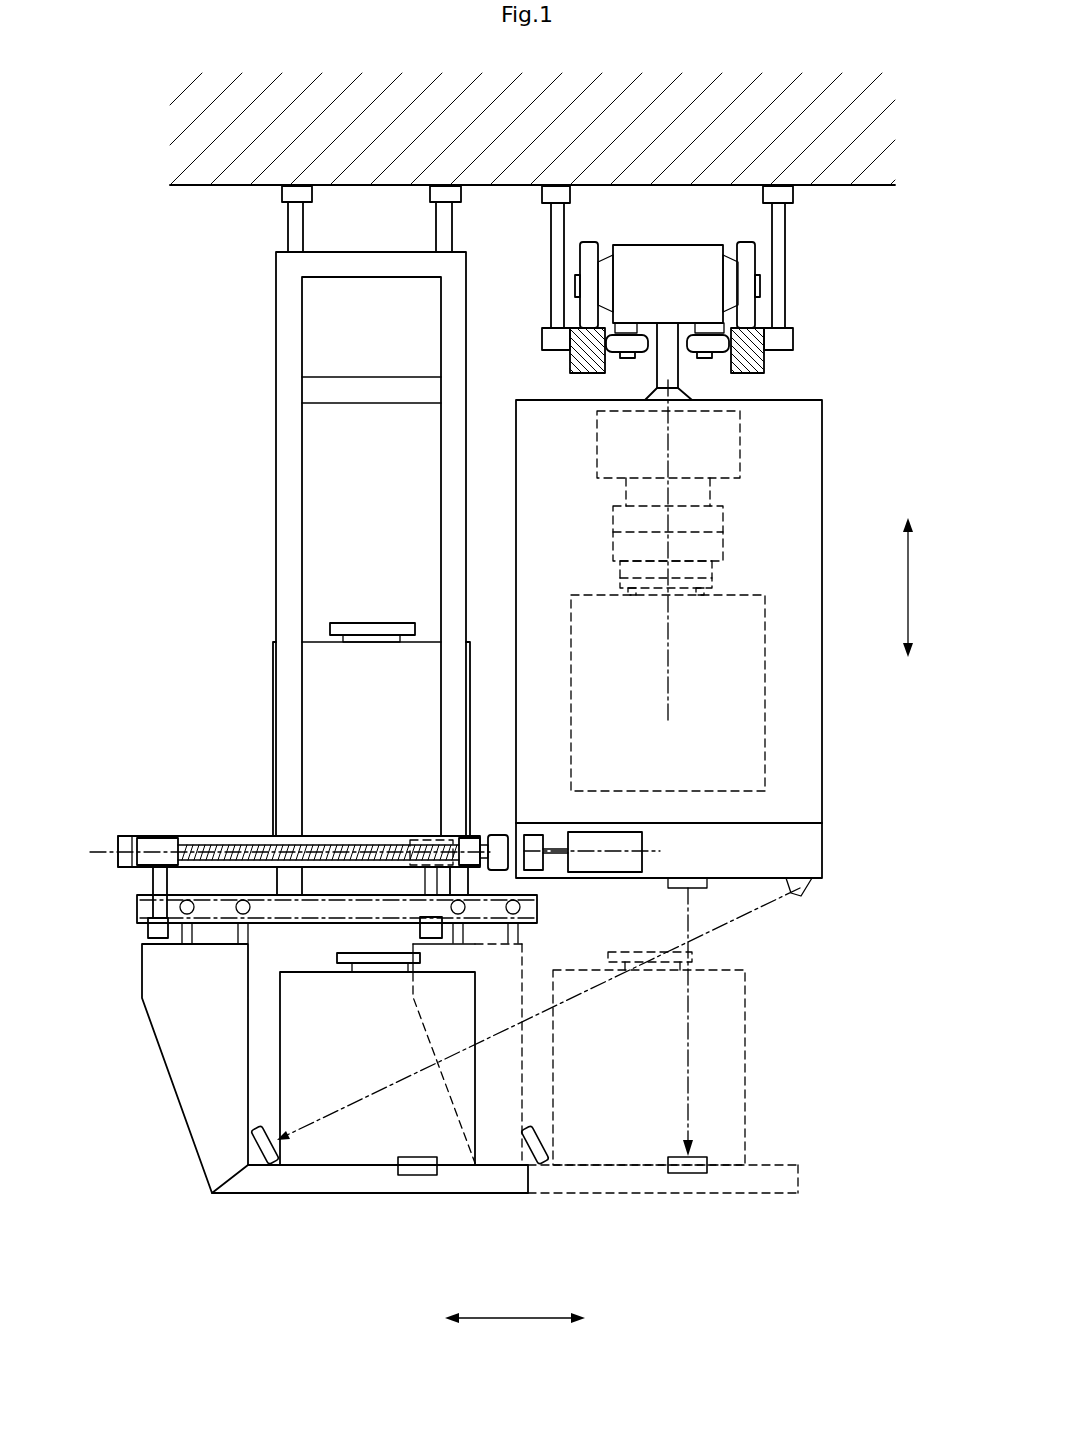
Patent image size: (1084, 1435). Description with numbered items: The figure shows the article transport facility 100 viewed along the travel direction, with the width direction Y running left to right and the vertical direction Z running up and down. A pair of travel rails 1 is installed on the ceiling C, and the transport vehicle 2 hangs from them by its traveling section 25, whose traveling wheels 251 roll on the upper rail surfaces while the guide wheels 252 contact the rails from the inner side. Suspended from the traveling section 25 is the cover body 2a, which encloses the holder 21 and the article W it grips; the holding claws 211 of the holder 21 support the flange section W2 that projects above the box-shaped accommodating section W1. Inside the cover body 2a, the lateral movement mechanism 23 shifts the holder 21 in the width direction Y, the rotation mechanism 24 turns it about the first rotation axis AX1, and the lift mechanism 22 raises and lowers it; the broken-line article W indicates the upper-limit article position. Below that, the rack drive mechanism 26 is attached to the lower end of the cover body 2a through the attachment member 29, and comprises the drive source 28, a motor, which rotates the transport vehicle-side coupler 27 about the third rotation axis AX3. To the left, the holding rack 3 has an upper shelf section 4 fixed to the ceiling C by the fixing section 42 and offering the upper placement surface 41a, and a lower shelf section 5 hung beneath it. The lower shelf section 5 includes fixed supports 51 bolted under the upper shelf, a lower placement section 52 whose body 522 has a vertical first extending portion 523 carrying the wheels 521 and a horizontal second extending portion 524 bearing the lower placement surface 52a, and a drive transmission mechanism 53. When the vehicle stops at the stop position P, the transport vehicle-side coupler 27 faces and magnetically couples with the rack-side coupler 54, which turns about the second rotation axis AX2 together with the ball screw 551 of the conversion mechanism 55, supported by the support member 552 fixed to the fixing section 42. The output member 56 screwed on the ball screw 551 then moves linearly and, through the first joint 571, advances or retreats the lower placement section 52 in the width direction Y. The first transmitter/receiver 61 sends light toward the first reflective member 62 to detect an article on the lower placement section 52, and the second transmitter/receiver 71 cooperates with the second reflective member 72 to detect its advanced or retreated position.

The article transport facility 100 is at (222, 296).
The ceiling C is at (820, 190).
The stop position P is at (852, 303).
The transport vehicle 2 is at (815, 271).
The cover body 2a is at (810, 752).
The travel rails 1 is at (766, 358).
The traveling section 25 is at (624, 246).
The traveling wheels 251 is at (590, 242).
The guide wheels 252 is at (640, 355).
The lateral movement mechanism 23 is at (745, 447).
The rotation mechanism 24 is at (713, 497).
The lift mechanism 22 is at (725, 518).
The holder 21 is at (613, 550).
The holding claws 211 is at (620, 578).
The rack drive mechanism 26 is at (622, 820).
The transport vehicle-side coupler 27 is at (535, 872).
The drive source 28 is at (606, 872).
The attachment member 29 is at (822, 848).
The first rotation axis AX1 is at (668, 710).
The third rotation axis AX3 is at (655, 851).
The second transmitter/receiver 71 is at (675, 888).
The first transmitter/receiver 61 is at (803, 892).
The first reflective member 62 is at (252, 1167).
The holding rack 3 is at (455, 751).
The upper shelf section 4 is at (319, 718).
The fixing section 42 is at (288, 590).
The upper placement surface 41a is at (364, 826).
The article W is at (765, 660).
The accommodating section W1 is at (415, 652).
The flange section W2 is at (370, 623).
The lower shelf section 5 is at (455, 1016).
The conversion mechanism 55 is at (284, 815).
The ball screw 551 is at (258, 836).
The support member 552 is at (218, 838).
The output member 56 is at (142, 836).
The drive transmission mechanism 53 is at (157, 818).
The rack-side coupler 54 is at (497, 834).
The second rotation axis AX2 is at (112, 856).
The first joint 571 is at (158, 893).
The fixed supports 51 is at (158, 938).
The wheels 521 is at (190, 902).
The lower placement section 52 is at (468, 1106).
The first extending portion 523 is at (166, 1066).
The lower placement surface 52a is at (303, 1165).
The second extending portion 524 is at (455, 1190).
The body 522 is at (765, 1180).
The second reflective member 72 is at (412, 1175).
The vertical direction Z is at (918, 587).
The width direction Y is at (515, 1331).